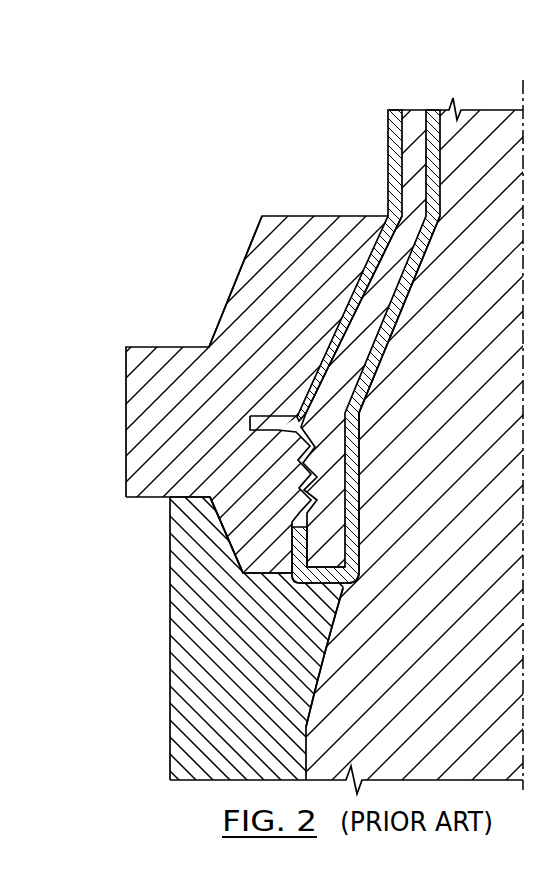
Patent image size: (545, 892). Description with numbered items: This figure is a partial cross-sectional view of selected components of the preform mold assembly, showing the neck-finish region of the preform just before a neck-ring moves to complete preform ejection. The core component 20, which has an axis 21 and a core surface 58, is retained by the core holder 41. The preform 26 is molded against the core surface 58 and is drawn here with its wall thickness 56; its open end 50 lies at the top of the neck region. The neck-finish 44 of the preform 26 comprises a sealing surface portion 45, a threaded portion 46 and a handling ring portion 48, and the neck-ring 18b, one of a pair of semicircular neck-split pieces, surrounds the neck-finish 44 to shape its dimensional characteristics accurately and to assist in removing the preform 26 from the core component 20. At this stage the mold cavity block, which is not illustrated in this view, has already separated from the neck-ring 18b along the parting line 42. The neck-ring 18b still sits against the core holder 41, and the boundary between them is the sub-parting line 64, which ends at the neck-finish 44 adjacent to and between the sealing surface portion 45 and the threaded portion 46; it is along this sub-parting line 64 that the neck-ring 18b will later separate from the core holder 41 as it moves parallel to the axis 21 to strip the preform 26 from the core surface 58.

The neck-ring component 18b is at (262, 276).
The core component 20 is at (477, 321).
The axis 21 is at (522, 92).
The preform 26 is at (366, 270).
The core holder 41 is at (200, 716).
The parting line 42 is at (246, 258).
The neck-finish 44 is at (278, 477).
The sealing surface portion 45 is at (340, 588).
The threaded portion 46 is at (295, 517).
The handling ring portion 48 is at (256, 420).
The open end 50 is at (341, 586).
The wall thickness 56 is at (332, 497).
The core surface 58 is at (360, 417).
The sub-parting line 64 is at (245, 540).